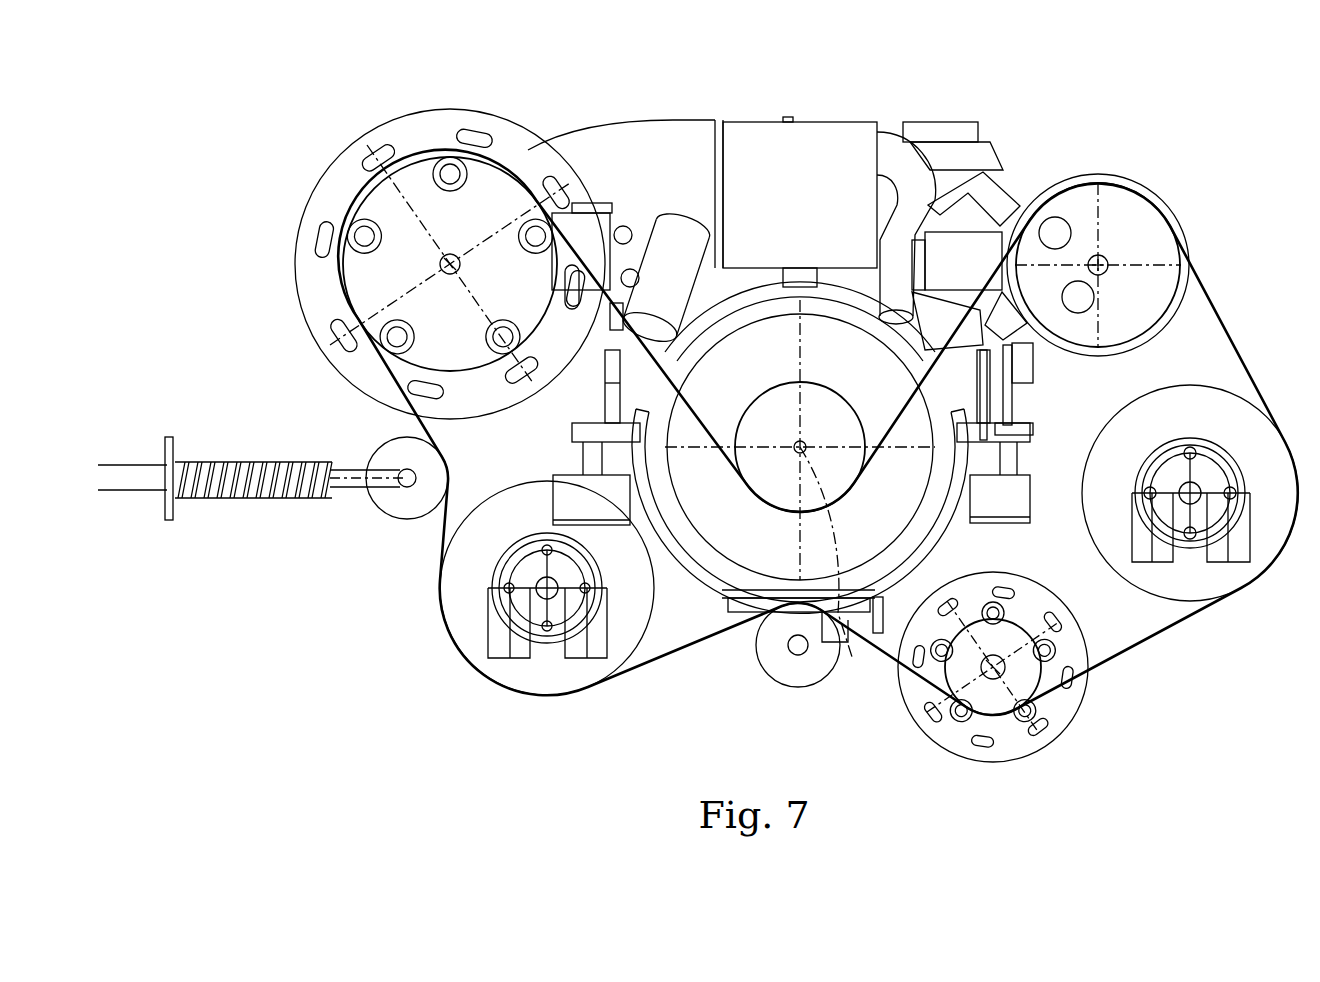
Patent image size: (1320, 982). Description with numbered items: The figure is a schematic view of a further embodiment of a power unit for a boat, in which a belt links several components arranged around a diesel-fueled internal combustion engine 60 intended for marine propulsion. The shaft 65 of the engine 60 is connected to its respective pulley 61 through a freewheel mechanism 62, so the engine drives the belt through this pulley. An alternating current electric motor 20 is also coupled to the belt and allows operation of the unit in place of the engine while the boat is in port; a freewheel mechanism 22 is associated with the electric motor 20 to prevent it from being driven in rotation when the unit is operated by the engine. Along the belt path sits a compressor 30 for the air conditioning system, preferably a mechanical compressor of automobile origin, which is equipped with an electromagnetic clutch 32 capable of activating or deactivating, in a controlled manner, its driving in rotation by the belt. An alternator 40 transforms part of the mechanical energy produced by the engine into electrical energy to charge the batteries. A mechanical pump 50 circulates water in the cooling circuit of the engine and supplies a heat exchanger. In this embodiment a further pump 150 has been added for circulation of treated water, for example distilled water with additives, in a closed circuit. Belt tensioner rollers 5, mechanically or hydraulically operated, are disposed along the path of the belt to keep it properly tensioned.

The belt tensioner rollers 5 is at (405, 508).
The electric motor 20 is at (313, 180).
The freewheel mechanism 22 is at (360, 273).
The compressor 30 is at (1135, 178).
The electromagnetic clutch 32 is at (1165, 255).
The alternator 40 is at (1017, 742).
The mechanical pump 50 is at (527, 605).
The internal combustion engine 60 is at (835, 175).
The pulley 61 is at (750, 457).
The freewheel mechanism 62 is at (768, 337).
The shaft 65 is at (854, 666).
The further pump 150 is at (1205, 512).